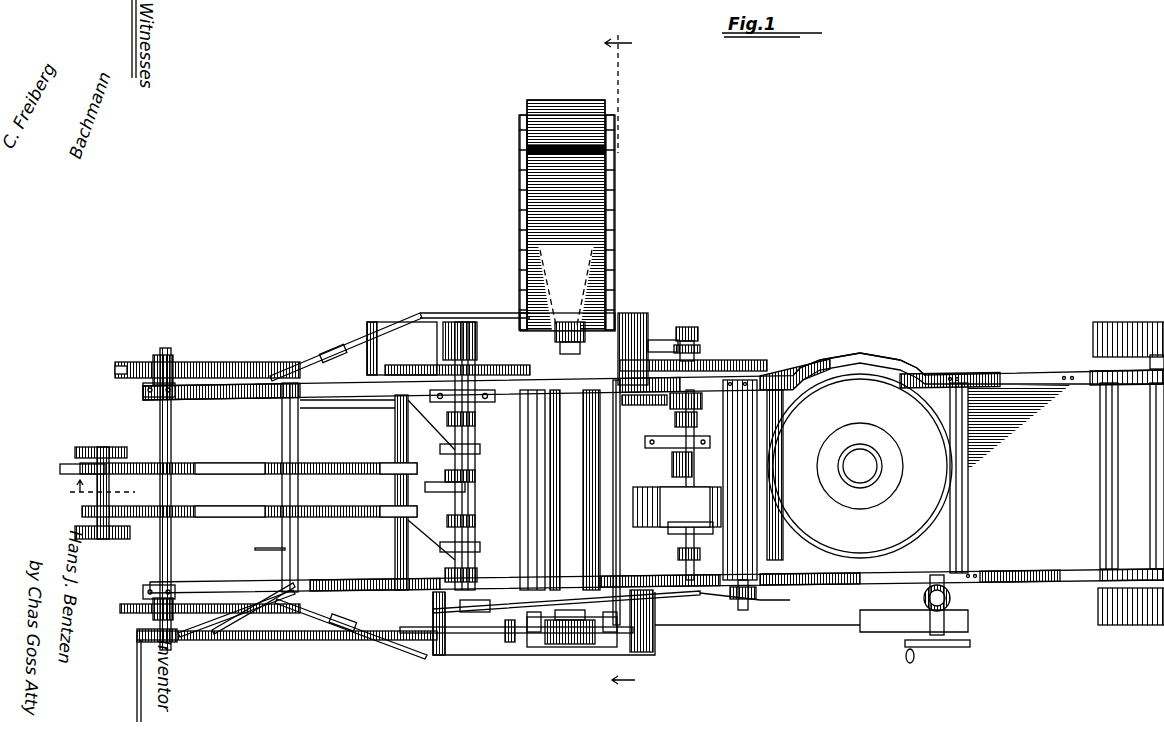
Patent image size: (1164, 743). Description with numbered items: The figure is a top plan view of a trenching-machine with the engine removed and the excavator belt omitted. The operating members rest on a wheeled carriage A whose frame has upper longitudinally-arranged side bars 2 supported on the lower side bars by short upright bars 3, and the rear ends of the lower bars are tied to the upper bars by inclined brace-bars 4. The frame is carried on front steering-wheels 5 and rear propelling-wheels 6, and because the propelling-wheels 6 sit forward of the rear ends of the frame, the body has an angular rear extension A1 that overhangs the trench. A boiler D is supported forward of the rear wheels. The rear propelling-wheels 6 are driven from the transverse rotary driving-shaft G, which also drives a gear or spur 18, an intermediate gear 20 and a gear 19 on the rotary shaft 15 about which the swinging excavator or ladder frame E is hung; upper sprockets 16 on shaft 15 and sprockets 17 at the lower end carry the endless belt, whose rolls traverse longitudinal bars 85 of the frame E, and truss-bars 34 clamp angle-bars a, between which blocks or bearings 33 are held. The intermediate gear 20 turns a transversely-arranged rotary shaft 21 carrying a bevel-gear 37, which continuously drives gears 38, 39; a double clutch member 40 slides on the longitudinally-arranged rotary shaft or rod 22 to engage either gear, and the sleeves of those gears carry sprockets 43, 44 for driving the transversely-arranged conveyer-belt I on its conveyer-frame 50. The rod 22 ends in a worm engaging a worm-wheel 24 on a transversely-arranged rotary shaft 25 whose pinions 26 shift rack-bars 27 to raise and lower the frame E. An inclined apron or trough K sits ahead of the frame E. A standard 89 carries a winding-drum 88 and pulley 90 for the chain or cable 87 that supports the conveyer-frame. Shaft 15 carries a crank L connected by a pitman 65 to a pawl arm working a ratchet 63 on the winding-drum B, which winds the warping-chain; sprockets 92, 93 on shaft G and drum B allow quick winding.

The inclined brace-bars 4 is at (620, 360).
The wheeled carriage A is at (653, 463).
The angular rear extension A1 is at (201, 491).
The transversely-arranged rotary shaft 25 is at (283, 372).
The pinions 26 is at (158, 358).
The rack-bars 27 is at (118, 373).
The worm-wheel 24 is at (190, 640).
The swinging excavator or ladder frame E is at (316, 487).
The truss-bars 34 is at (248, 478).
The sprockets 17 is at (102, 496).
The longitudinal bars 85 is at (80, 470).
The upright bars 3 is at (97, 491).
The inclined apron or trough K is at (463, 456).
The upper sprockets 16 is at (443, 448).
The rotary shaft 15 is at (440, 548).
The gear 19 is at (448, 344).
The conveyer-belt I is at (600, 262).
The conveyer-frame 50 is at (614, 200).
The chain or cable 87 is at (525, 240).
The standard 89 is at (522, 330).
The intermediate gear 20 is at (600, 335).
The rear propelling-wheels 6 is at (632, 335).
The winding-drum 88 is at (655, 340).
The rotary driving-shaft G is at (694, 332).
The gear or spur 18 is at (737, 362).
The transversely-arranged rotary shaft 21 is at (560, 500).
The pulley 90 is at (582, 502).
The crank L is at (445, 614).
The bevel-gear 37 is at (475, 614).
The gear 38 is at (587, 650).
The double clutch member 40 is at (578, 648).
The gear 39 is at (548, 648).
The sprocket 44 is at (508, 645).
The sprocket 43 is at (648, 660).
The pitman 65 is at (680, 650).
The winding-drum B is at (671, 485).
The sprocket 92 is at (678, 553).
The sprocket 93 is at (740, 600).
The ratchet 63 is at (758, 592).
The boiler D is at (860, 466).
The upper longitudinally-arranged side bars 2 is at (852, 362).
The front steering-wheels 5 is at (1125, 328).
The blocks or bearings 33 is at (264, 557).
The angle-bars a is at (263, 542).
The longitudinally-arranged rotary shaft or rod 22 is at (351, 632).